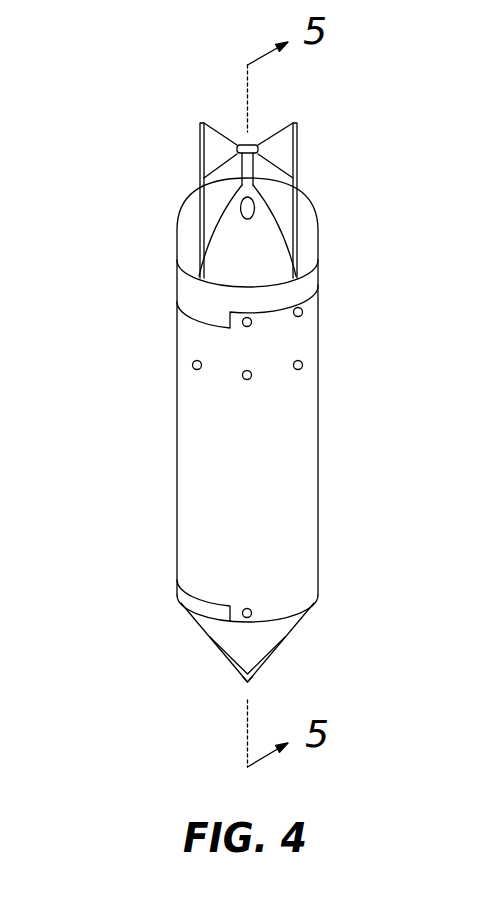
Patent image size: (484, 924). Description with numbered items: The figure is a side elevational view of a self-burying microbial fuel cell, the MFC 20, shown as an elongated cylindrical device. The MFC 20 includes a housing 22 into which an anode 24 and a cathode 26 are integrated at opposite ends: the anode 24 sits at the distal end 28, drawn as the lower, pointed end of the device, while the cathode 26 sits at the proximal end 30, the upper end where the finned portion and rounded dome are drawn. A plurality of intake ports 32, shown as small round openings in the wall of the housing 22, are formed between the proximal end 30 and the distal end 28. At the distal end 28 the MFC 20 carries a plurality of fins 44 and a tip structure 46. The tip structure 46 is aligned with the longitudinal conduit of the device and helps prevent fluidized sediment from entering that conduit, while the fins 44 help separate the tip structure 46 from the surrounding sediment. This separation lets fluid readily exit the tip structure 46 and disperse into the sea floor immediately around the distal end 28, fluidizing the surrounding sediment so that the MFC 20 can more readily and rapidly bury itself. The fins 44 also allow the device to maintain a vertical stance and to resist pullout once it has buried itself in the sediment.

The self-burying MFC 20 is at (138, 58).
The housing 22 is at (261, 522).
The anode 24 is at (215, 623).
The cathode 26 is at (310, 278).
The distal end 28 is at (255, 684).
The proximal end 30 is at (292, 126).
The intake ports 32 is at (302, 367).
The fins 44 is at (228, 658).
The tip structure 46 is at (243, 681).